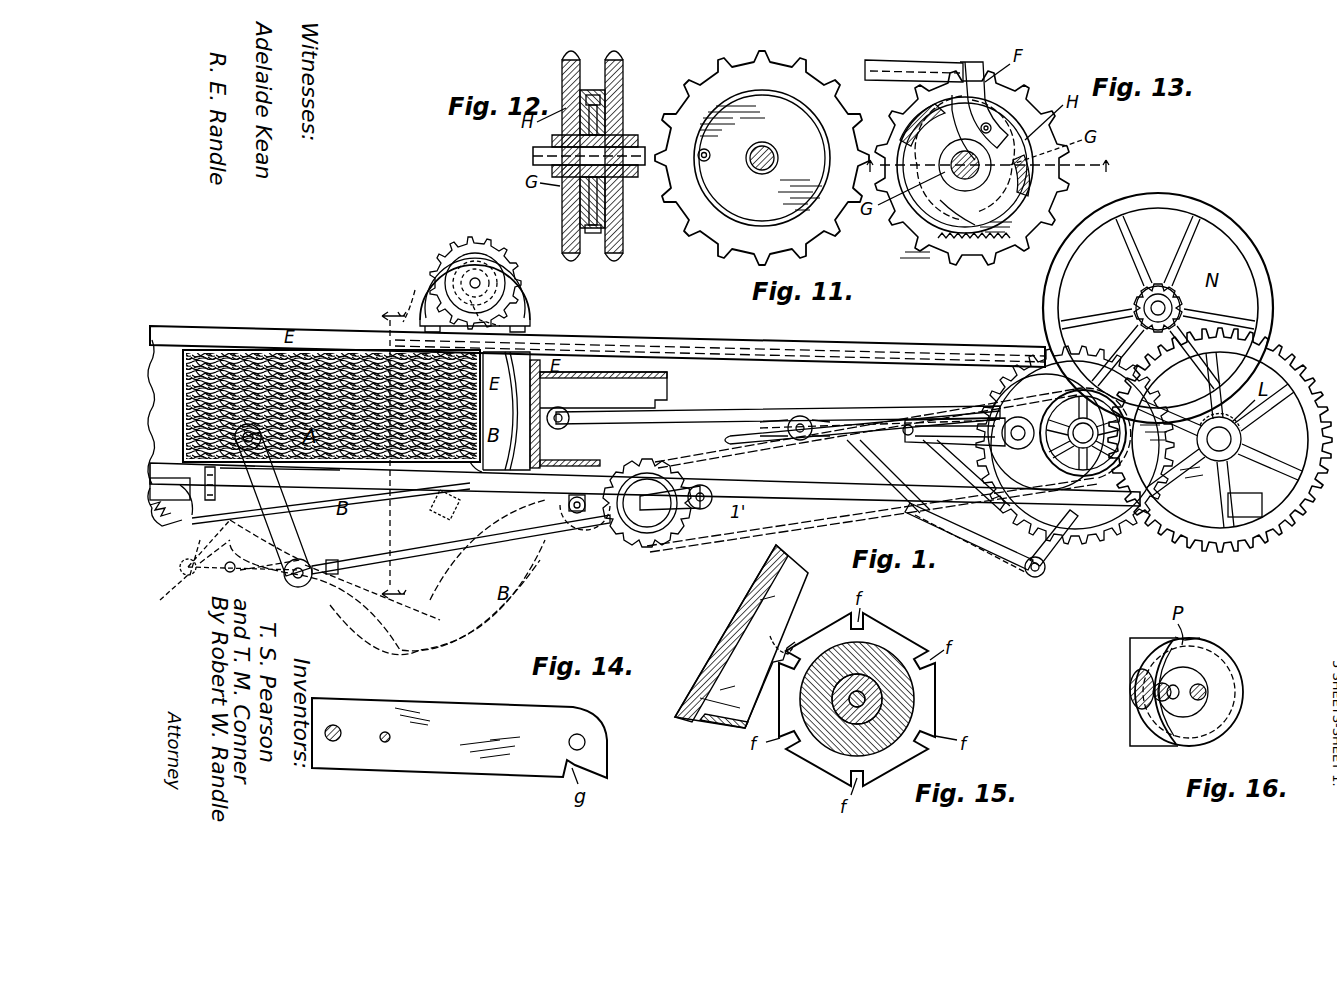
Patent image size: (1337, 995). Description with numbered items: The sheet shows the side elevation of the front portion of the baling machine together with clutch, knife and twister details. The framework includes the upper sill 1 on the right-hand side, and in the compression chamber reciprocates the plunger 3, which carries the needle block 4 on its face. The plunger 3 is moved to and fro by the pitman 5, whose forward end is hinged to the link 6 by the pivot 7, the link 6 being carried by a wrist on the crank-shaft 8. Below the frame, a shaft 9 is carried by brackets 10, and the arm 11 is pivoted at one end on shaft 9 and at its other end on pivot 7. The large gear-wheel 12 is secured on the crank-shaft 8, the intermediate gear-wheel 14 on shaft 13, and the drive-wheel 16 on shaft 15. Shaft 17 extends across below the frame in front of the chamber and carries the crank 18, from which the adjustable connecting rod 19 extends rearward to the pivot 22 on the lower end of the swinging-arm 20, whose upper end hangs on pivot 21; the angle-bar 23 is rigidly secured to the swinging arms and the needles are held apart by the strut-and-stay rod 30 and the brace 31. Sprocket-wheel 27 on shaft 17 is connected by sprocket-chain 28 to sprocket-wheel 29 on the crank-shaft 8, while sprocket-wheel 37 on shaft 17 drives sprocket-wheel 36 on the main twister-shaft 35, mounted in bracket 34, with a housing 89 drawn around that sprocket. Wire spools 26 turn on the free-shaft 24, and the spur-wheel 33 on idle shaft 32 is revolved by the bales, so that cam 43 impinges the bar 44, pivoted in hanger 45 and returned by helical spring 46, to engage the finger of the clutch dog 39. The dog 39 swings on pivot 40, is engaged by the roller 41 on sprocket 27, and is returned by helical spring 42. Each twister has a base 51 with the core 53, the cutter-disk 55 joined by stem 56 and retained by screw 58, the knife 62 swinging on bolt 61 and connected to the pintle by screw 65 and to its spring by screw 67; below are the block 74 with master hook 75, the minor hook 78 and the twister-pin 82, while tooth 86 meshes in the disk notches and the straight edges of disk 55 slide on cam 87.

In FIG. 1, the upper sill 1 is at (660, 347).
In FIG. 1, the plunger 3 is at (603, 419).
In FIG. 1, the needle block 4 is at (511, 411).
In FIG. 1, the pitman 5 is at (702, 413).
In FIG. 1, the link or auxiliary pitman 6 is at (862, 413).
In FIG. 1, the pivot 7 is at (804, 416).
In FIG. 1, the crank-shaft 8 is at (1083, 433).
In FIG. 1, the shaft 9 is at (1030, 576).
In FIG. 1, the brackets 10 is at (1052, 560).
In FIG. 1, the arm 11 is at (985, 545).
In FIG. 1, the large gear-wheel 12 is at (1108, 536).
In FIG. 13, the large gear-wheel 12 is at (991, 166).
In FIG. 1, the shaft 13 is at (1242, 440).
In FIG. 1, the intermediate gear-wheel 14 is at (1254, 546).
In FIG. 1, the shaft 15 is at (1144, 302).
In FIG. 1, the drive-wheel 16 is at (1262, 254).
In FIG. 1, the shaft 17 is at (394, 454).
In FIG. 11, the shaft 17 is at (755, 173).
In FIG. 12, the shaft 17 is at (533, 158).
In FIG. 13, the shaft 17 is at (980, 155).
In FIG. 1, the crank 18 is at (660, 520).
In FIG. 1, the adjustable connecting rod 19 is at (412, 553).
In FIG. 1, the swinging-arm 20 is at (292, 515).
In FIG. 1, the pivot 21 is at (248, 430).
In FIG. 1, the pivot 22 is at (293, 585).
In FIG. 1, the upper angle-bar 23 is at (250, 544).
In FIG. 1, the free-shaft 24 is at (575, 515).
In FIG. 1, the spool 26 is at (582, 528).
In FIG. 1, the sprocket-wheel 27 is at (636, 540).
In FIG. 11, the sprocket-wheel 27 is at (700, 235).
In FIG. 12, the sprocket-wheel 27 is at (622, 86).
In FIG. 1, the sprocket-chain 28 is at (720, 540).
In FIG. 1, the sprocket-wheel 29 is at (1018, 416).
In FIG. 1, the strut-and-stay rod 30 is at (450, 495).
In FIG. 1, the brace 31 is at (420, 500).
In FIG. 1, the idle shaft 32 is at (178, 515).
In FIG. 1, the spur-wheel 33 is at (168, 475).
In FIG. 1, the bracket 34 is at (401, 297).
In FIG. 1, the main twister-shaft 35 is at (474, 276).
In FIG. 1, the sprocket-wheel 36 is at (530, 300).
In FIG. 12, the sprocket-wheel 37 is at (560, 203).
In FIG. 13, the sprocket-wheel 37 is at (945, 255).
In FIG. 12, the dog 39 is at (592, 232).
In FIG. 13, the dog 39 is at (973, 196).
In FIG. 13, the pivot 40 is at (966, 128).
In FIG. 11, the roller 41 is at (708, 150).
In FIG. 12, the roller 41 is at (594, 95).
In FIG. 13, the helical spring 42 is at (990, 250).
In FIG. 1, the cam 43 is at (210, 465).
In FIG. 1, the bar 44 is at (331, 451).
In FIG. 13, the bar 44 is at (899, 59).
In FIG. 1, the hanger 45 is at (464, 459).
In FIG. 1, the helical spring 46 is at (224, 560).
In FIG. 1, the base 51 is at (392, 339).
In FIG. 15, the core 53 is at (880, 700).
In FIG. 16, the core 53 is at (1196, 672).
In FIG. 15, the cutter-disk 55 is at (812, 760).
In FIG. 15, the body or stem 56 is at (886, 657).
In FIG. 15, the screw 58 is at (875, 690).
In FIG. 14, the bolt 61 is at (587, 741).
In FIG. 14, the knife 62 is at (525, 776).
In FIG. 14, the screw 65 is at (387, 743).
In FIG. 14, the screw 67 is at (333, 742).
In FIG. 16, the block 74 is at (1242, 678).
In FIG. 16, the master hook 75 is at (1130, 684).
In FIG. 16, the minor hook 78 is at (1166, 702).
In FIG. 16, the twister-pin 82 is at (1206, 693).
In FIG. 15, the tooth 86 is at (772, 645).
In FIG. 15, the cam 87 is at (741, 636).
In FIG. 1, the housing 89 is at (432, 250).
In FIG. 15, the housing 89 is at (728, 620).